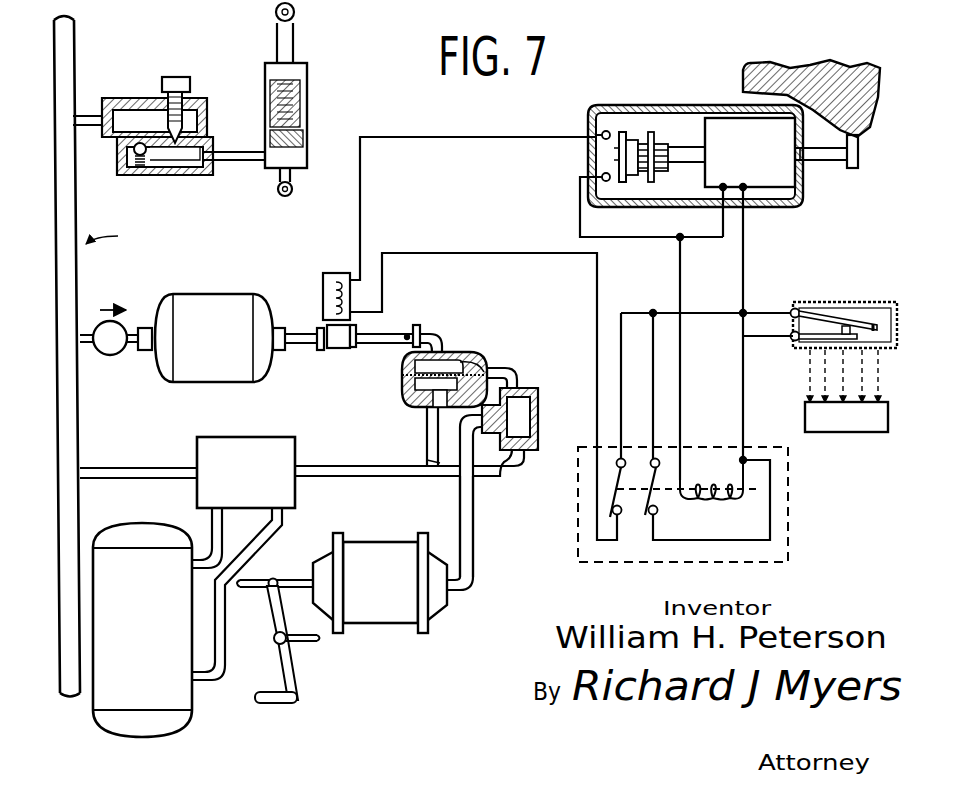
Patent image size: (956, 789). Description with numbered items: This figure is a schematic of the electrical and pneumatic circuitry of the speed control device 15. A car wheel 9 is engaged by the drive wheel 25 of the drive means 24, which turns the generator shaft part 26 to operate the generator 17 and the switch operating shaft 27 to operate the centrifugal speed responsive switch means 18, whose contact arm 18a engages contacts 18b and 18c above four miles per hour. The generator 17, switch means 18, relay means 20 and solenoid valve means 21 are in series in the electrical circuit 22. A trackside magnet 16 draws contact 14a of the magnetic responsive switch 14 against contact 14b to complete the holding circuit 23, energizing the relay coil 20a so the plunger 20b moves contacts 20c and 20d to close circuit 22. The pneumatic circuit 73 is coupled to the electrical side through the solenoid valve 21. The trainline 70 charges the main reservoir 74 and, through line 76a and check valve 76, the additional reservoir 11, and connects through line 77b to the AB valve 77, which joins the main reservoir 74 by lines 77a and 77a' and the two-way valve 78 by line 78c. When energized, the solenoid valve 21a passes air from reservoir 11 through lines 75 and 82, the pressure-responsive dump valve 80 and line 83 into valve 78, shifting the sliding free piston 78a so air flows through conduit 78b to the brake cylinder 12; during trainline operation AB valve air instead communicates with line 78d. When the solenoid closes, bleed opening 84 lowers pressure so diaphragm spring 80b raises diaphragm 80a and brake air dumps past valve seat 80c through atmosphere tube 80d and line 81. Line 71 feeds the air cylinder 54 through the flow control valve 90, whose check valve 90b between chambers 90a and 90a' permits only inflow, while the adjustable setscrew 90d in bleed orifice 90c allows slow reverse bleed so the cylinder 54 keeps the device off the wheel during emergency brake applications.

The car wheel 9 is at (872, 115).
The additional reservoir tank 11 is at (215, 290).
The brake cylinder means 12 is at (378, 625).
The magnetic responsive switch means 14 is at (856, 319).
The magnetic drawn contact 14a is at (853, 323).
The contact 14b is at (870, 332).
The speed control device 15 is at (372, 250).
The magnet 16 is at (840, 434).
The generator means 17 is at (735, 128).
The centrifugal speed responsive switch means 18 is at (667, 128).
The contact arm 18a is at (620, 135).
The electrical contact 18b is at (602, 132).
The electrical contact 18c is at (603, 180).
The relay means 20 is at (727, 412).
The relay coil 20a is at (723, 497).
The plunger 20b is at (667, 485).
The moving contact 20c is at (617, 493).
The moving contact 20d is at (652, 495).
The solenoid valve means 21 is at (318, 278).
The solenoid valve 21a is at (330, 350).
The electrical circuit 22 is at (397, 137).
The holding series circuit 23 is at (745, 270).
The drive means 24 is at (833, 163).
The drive wheel 25 is at (860, 157).
The generator shaft part 26 is at (817, 163).
The switch operating shaft 27 is at (690, 147).
The air cylinder means 54 is at (312, 62).
The trainline 70 is at (75, 57).
The line 71 is at (83, 128).
The pneumatic circuit 73 is at (118, 236).
The main air reservoir 74 is at (197, 693).
The line 75 is at (300, 334).
The check valve 76 is at (110, 357).
The line 76a is at (95, 330).
The AB valve 77 is at (240, 437).
The line 77a is at (186, 534).
The line 77a' is at (270, 589).
The line 77b is at (128, 468).
The two-way valve unit 78 is at (535, 388).
The sliding free piston 78a is at (533, 473).
The conduit 78b is at (530, 415).
The line 78c is at (483, 475).
The line 78d is at (467, 495).
The pressure-responsive dump valve 80 is at (421, 373).
The diaphragm 80a is at (437, 352).
The diaphragm spring 80b is at (432, 412).
The valve seat 80c is at (472, 362).
The atmosphere tube 80d is at (427, 436).
The line 81 is at (427, 460).
The line 82 is at (385, 334).
The line 83 is at (510, 368).
The air bleed opening 84 is at (400, 347).
The flow control valve means 90 is at (196, 107).
The chamber 90a is at (154, 97).
The chamber 90a' is at (189, 171).
The check valve 90b is at (140, 175).
The bleed orifice 90c is at (218, 137).
The adjustable setscrew 90d is at (178, 78).